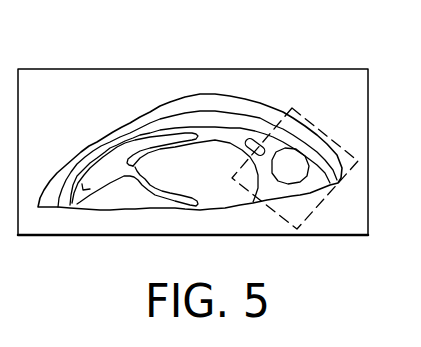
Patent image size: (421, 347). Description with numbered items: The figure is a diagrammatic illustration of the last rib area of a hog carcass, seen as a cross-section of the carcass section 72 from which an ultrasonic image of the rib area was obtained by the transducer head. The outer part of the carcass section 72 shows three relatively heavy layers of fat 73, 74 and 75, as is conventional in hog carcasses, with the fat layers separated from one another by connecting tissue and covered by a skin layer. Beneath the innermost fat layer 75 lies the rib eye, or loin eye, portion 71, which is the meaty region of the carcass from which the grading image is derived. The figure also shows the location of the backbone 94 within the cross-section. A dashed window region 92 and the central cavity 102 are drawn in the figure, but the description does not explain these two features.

The rib eye portion 71 is at (334, 134).
The carcass section 72 is at (195, 88).
The fat layer 73 is at (109, 133).
The fat layer 74 is at (107, 150).
The fat layer 75 is at (97, 162).
The region of interest window 92 is at (286, 86).
The backbone 94 is at (272, 199).
The loin eye muscle 102 is at (219, 195).